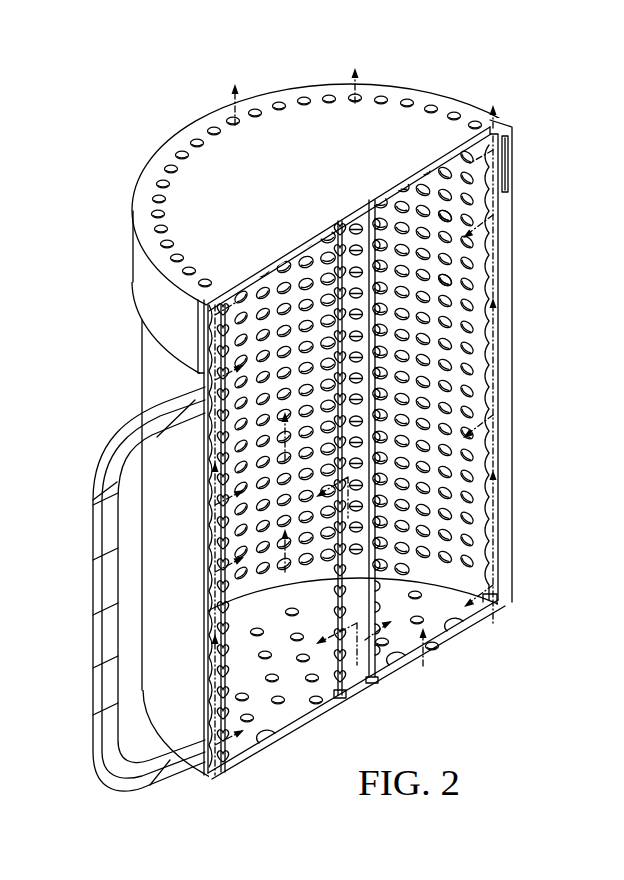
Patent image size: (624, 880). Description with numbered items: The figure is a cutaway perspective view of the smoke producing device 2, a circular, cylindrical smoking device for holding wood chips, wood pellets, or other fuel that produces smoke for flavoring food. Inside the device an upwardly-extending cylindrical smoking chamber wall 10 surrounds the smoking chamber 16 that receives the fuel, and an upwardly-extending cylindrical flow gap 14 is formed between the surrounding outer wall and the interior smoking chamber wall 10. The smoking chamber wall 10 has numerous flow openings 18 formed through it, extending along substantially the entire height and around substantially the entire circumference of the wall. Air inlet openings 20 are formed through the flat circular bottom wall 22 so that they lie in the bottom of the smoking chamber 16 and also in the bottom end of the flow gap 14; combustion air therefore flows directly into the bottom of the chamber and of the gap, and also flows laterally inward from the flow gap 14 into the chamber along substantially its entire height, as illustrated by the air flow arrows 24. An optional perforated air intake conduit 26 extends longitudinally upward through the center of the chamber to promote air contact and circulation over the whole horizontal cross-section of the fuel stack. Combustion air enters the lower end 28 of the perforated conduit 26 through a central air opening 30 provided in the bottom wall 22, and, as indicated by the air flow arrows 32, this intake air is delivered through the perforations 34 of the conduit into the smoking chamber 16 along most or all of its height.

The smoke producing device 2 is at (567, 97).
The smoking chamber wall 10 is at (486, 540).
The flow gap 14 is at (495, 374).
The smoking chamber 16 is at (488, 562).
The flow openings 18 is at (452, 212).
The air inlet openings 20 is at (272, 684).
The bottom wall 22 is at (490, 618).
The air flow arrows 24 is at (494, 430).
The perforated air intake conduit 26 is at (326, 300).
The lower end 28 is at (343, 700).
The central air opening 30 is at (362, 684).
The air flow arrows 32 is at (383, 636).
The perforations 34 is at (336, 297).